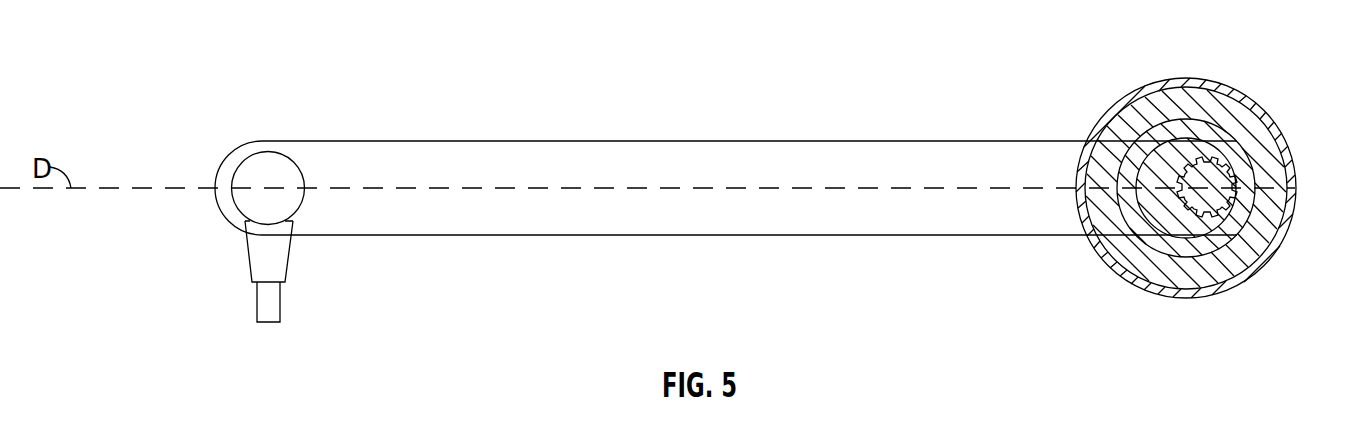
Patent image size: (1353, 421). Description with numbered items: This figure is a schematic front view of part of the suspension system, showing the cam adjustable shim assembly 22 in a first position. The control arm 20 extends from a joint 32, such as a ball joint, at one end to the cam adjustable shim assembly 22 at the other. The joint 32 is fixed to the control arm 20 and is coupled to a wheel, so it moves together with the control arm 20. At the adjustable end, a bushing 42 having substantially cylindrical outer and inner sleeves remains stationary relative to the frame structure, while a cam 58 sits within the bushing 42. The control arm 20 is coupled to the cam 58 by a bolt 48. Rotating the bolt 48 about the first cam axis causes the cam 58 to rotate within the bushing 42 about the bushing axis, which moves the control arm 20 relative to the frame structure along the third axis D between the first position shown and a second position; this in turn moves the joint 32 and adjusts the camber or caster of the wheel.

The control arm 20 is at (738, 140).
The cam adjustable shim assembly 22 is at (1211, 185).
The joint 32 is at (237, 168).
The bushing 42 is at (1272, 228).
The bolt 48 is at (1232, 168).
The cam 58 is at (1160, 215).